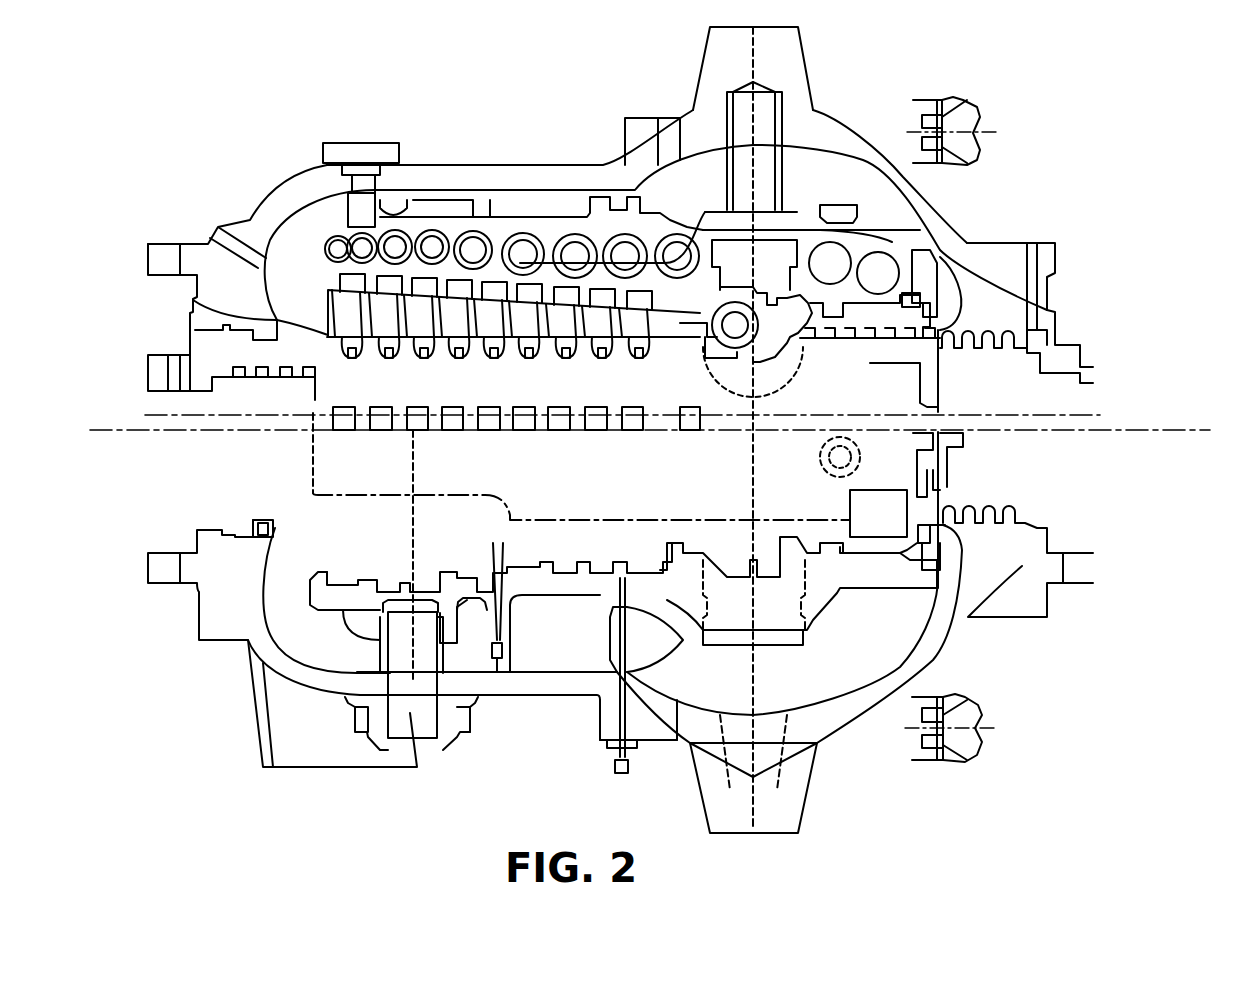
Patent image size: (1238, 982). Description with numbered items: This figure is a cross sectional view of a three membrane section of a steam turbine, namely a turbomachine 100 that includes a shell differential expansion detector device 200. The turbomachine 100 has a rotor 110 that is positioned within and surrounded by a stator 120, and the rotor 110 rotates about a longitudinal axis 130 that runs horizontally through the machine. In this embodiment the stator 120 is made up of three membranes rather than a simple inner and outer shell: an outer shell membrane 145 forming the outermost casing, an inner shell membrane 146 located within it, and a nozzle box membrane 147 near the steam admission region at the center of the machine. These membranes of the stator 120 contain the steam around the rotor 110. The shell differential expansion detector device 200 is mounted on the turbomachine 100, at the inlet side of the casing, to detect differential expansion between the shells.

The turbomachine 100 is at (877, 792).
The rotor 110 is at (847, 410).
The stator 120 is at (550, 228).
The longitudinal axis 130 is at (121, 430).
The outer shell membrane 145 is at (863, 157).
The inner shell membrane 146 is at (892, 242).
The nozzle box membrane 147 is at (767, 330).
The shell differential expansion detector device 200 is at (247, 277).